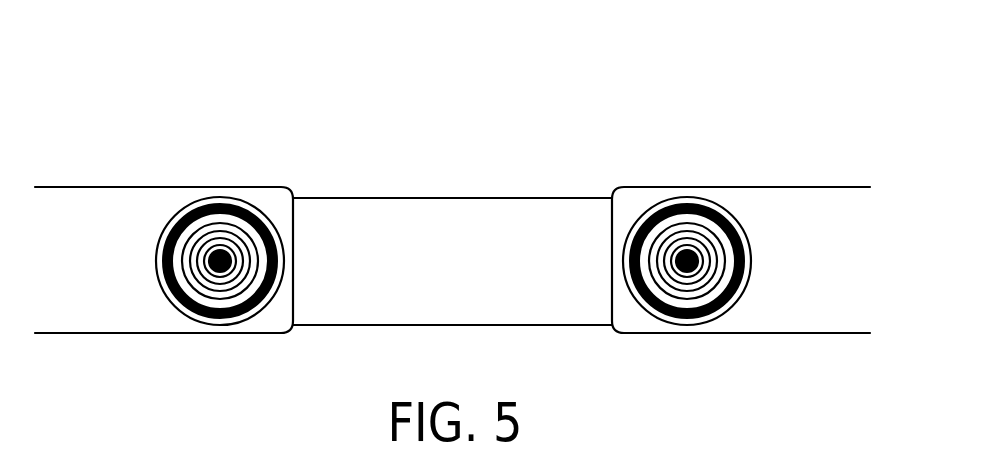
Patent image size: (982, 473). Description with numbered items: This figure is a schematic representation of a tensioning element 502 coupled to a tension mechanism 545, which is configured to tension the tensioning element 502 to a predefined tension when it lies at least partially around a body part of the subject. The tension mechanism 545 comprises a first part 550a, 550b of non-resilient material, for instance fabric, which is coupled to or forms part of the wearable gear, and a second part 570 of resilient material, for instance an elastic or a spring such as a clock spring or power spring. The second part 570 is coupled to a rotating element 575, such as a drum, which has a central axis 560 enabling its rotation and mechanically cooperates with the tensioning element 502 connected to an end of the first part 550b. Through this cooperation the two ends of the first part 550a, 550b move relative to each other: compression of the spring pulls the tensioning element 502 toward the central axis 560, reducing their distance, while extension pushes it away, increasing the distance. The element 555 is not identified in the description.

The tension mechanism 545 is at (110, 78).
The first part 550a is at (80, 205).
The first part 550b is at (816, 205).
The tensioning element 502 is at (461, 198).
The coil windings 555 is at (200, 234).
The central axis 560 is at (220, 272).
The second part 570 is at (182, 313).
The rotating element 575 is at (162, 270).